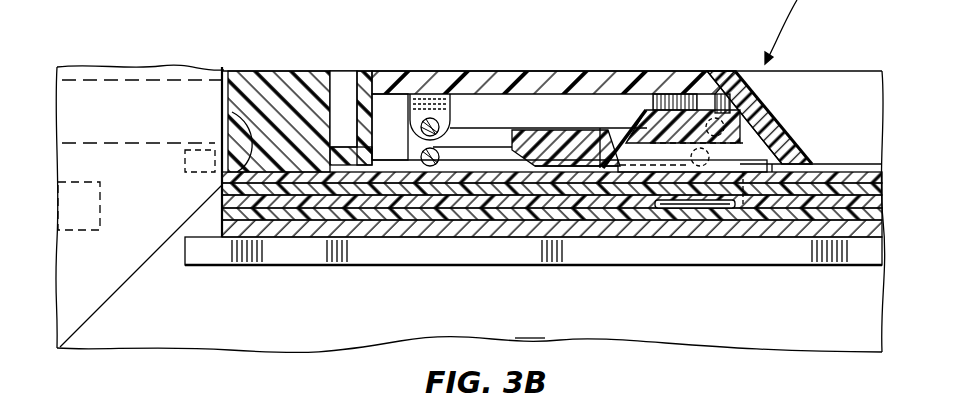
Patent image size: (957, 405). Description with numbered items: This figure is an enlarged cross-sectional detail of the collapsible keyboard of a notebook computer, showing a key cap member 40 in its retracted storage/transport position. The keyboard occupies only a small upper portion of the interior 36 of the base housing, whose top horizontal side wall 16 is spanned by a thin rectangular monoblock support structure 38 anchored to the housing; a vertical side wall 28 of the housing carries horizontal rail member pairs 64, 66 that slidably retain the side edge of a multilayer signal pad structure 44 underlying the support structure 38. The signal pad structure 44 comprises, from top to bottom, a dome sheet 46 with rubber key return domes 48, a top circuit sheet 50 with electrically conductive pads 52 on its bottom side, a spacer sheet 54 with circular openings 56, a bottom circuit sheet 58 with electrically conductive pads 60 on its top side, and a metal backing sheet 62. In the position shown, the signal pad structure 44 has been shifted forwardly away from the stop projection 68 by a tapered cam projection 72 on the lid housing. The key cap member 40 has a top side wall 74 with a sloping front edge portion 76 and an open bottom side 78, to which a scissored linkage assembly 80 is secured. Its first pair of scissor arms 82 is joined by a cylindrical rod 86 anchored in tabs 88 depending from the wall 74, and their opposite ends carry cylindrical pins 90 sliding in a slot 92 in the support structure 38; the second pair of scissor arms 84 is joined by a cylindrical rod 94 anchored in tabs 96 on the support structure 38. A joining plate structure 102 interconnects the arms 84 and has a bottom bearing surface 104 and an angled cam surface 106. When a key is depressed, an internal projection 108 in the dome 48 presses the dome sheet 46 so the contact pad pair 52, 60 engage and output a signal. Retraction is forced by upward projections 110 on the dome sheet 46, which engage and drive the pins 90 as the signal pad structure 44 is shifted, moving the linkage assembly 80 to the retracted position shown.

The top horizontal side wall 16 is at (173, 70).
The vertical side wall 28 is at (530, 326).
The interior of the base housing 36 is at (251, 340).
The monoblock support structure 38 is at (292, 71).
The key cap member 40 is at (688, 65).
The signal pad structure 44 is at (232, 110).
The dome sheet 46 is at (848, 183).
The key return dome 48 is at (758, 123).
The top circuit sheet 50 is at (838, 193).
The electrically conductive pad 52 is at (645, 172).
The spacer sheet 54 is at (880, 340).
The circular opening 56 is at (772, 165).
The bottom circuit sheet 58 is at (866, 210).
The electrically conductive pad 60 is at (684, 180).
The metal backing sheet 62 is at (828, 235).
The horizontal rail member pair 64 is at (184, 152).
The horizontal rail member pair 66 is at (186, 255).
The stop projection 68 is at (79, 230).
The tapered cam projection 72 is at (120, 292).
The top side wall 74 is at (513, 71).
The front edge portion 76 is at (752, 86).
The open bottom side 78 is at (342, 170).
The scissored linkage assembly 80 is at (612, 117).
The first pair of scissor arms 82 is at (476, 134).
The second pair of scissor arms 84 is at (507, 154).
The cylindrical rod 86 is at (428, 118).
The tab 88 is at (458, 115).
The cylindrical pin 90 is at (743, 205).
The slot 92 is at (750, 166).
The cylindrical rod 94 is at (424, 165).
The tab 96 is at (420, 158).
The joining plate structure 102 is at (586, 122).
The bottom bearing surface 104 is at (516, 163).
The cam surface 106 is at (604, 168).
The internal projection 108 is at (705, 100).
The upward projection 110 is at (697, 210).